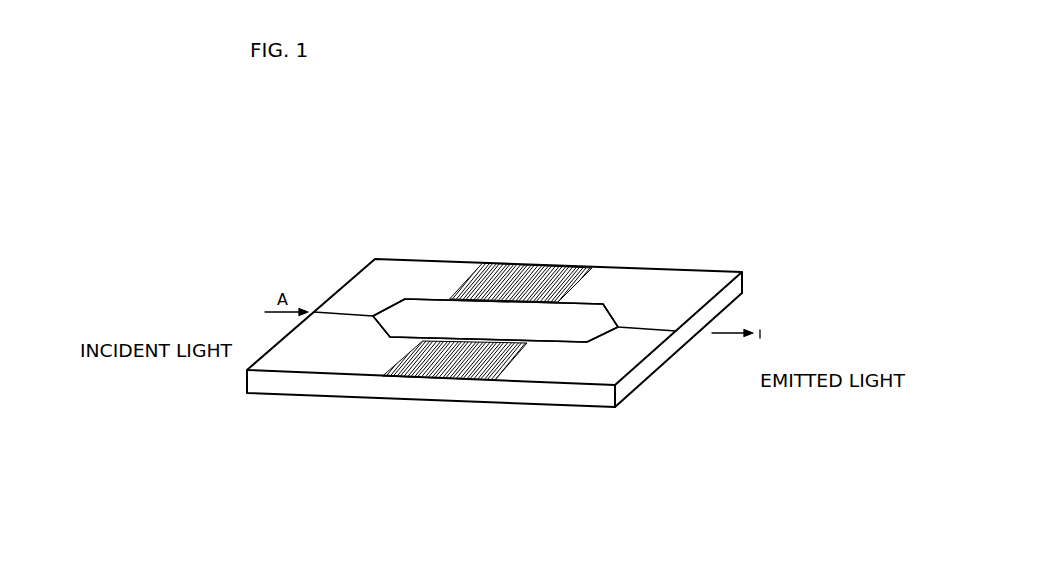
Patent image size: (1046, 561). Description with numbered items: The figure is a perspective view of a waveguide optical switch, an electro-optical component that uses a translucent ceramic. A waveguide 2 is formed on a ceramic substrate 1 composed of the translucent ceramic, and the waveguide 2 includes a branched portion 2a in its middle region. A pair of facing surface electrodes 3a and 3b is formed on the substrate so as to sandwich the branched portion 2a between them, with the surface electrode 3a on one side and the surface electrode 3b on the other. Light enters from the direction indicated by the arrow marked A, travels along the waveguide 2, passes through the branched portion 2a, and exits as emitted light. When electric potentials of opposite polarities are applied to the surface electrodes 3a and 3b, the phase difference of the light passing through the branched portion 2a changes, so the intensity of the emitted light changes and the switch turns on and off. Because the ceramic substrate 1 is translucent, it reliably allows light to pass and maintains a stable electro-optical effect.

The ceramic substrate 1 is at (658, 281).
The waveguide 2 is at (647, 329).
The branched portion 2a is at (562, 343).
The surface electrode 3a is at (520, 276).
The surface electrode 3b is at (458, 372).